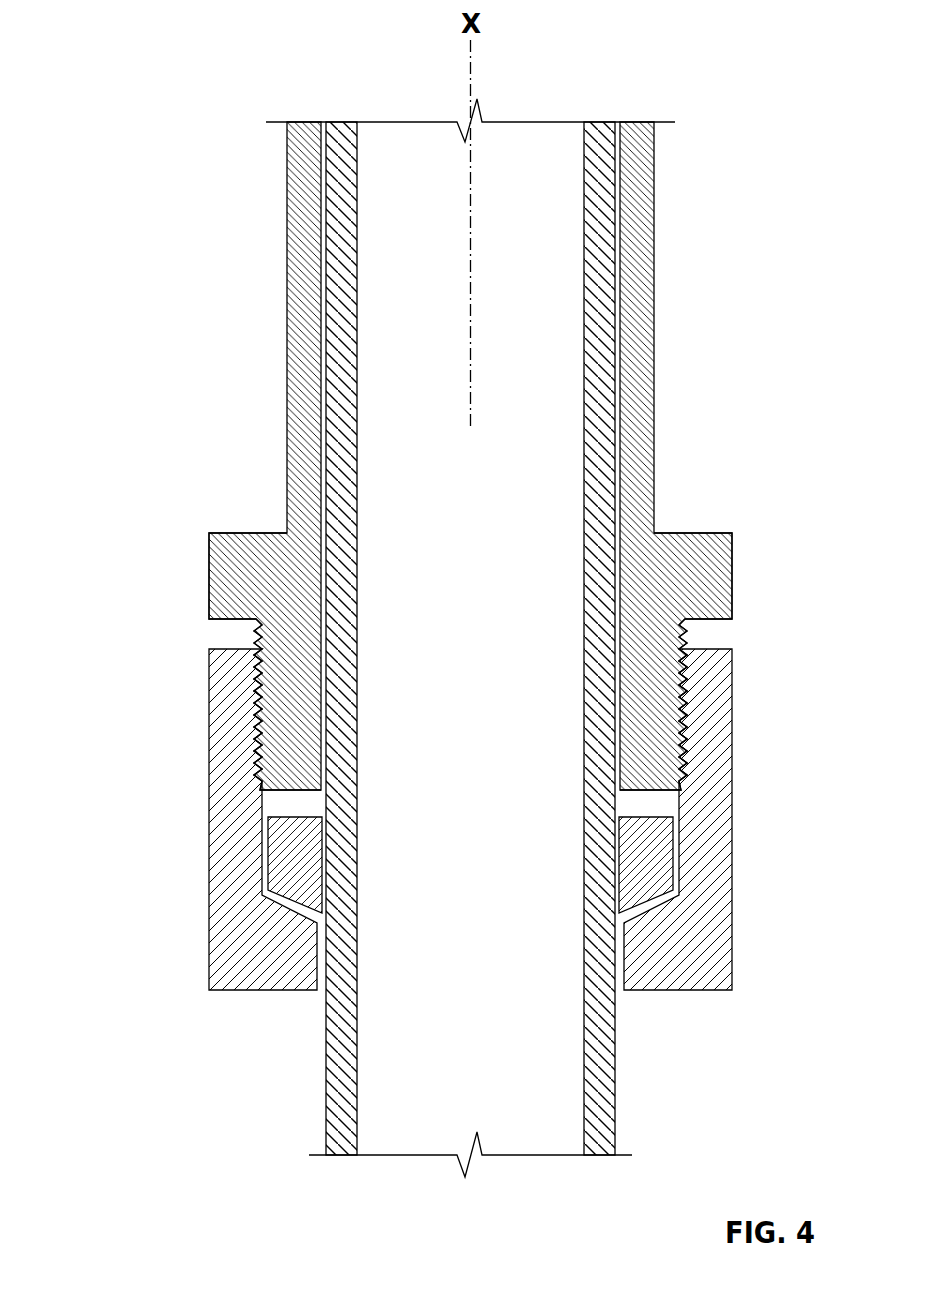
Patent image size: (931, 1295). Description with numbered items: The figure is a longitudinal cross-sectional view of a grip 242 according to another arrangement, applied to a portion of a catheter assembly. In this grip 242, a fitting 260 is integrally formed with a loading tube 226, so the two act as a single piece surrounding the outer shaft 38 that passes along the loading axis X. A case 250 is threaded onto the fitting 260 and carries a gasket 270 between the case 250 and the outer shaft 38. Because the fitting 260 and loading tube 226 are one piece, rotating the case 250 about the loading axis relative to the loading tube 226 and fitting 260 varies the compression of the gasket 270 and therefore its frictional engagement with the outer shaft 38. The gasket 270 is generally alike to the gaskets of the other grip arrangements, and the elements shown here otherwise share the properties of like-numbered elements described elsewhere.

The outer shaft 38 is at (617, 342).
The loading tube 226 is at (288, 351).
The grip 242 is at (435, 761).
The case 250 is at (733, 905).
The fitting 260 is at (214, 568).
The gasket 270 is at (268, 830).